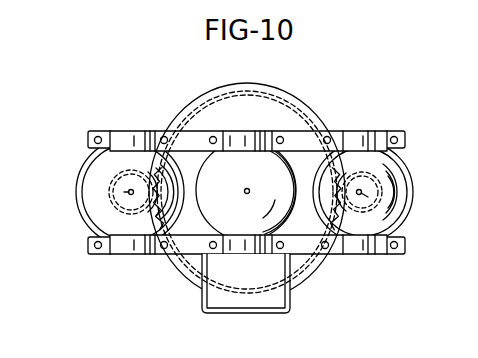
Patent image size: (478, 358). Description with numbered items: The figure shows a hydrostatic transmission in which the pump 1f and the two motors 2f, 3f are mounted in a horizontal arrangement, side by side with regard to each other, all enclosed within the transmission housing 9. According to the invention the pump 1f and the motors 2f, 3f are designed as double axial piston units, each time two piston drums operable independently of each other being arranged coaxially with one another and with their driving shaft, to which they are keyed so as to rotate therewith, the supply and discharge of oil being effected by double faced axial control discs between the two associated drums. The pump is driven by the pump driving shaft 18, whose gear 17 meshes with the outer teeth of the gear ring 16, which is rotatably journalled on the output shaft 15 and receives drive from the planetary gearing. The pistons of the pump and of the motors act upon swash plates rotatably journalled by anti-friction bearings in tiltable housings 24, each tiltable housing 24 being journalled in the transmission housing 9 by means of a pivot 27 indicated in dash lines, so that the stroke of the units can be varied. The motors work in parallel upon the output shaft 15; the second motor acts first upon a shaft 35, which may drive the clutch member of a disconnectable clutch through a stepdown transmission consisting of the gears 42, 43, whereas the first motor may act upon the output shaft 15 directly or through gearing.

The transmission housing 9 is at (174, 120).
The pivot 27 is at (240, 205).
The pump 1f is at (107, 192).
The first motor 2f is at (276, 168).
The second motor 3f is at (383, 192).
The output shaft 15 is at (251, 178).
The pump driving shaft 18 is at (108, 186).
The gear 17 is at (112, 198).
The tiltable housing 24 is at (99, 214).
The stepdown transmission gear 42 is at (404, 156).
The shaft 35 is at (369, 197).
The gear ring 16 is at (209, 283).
The stepdown transmission gear 43 is at (174, 264).